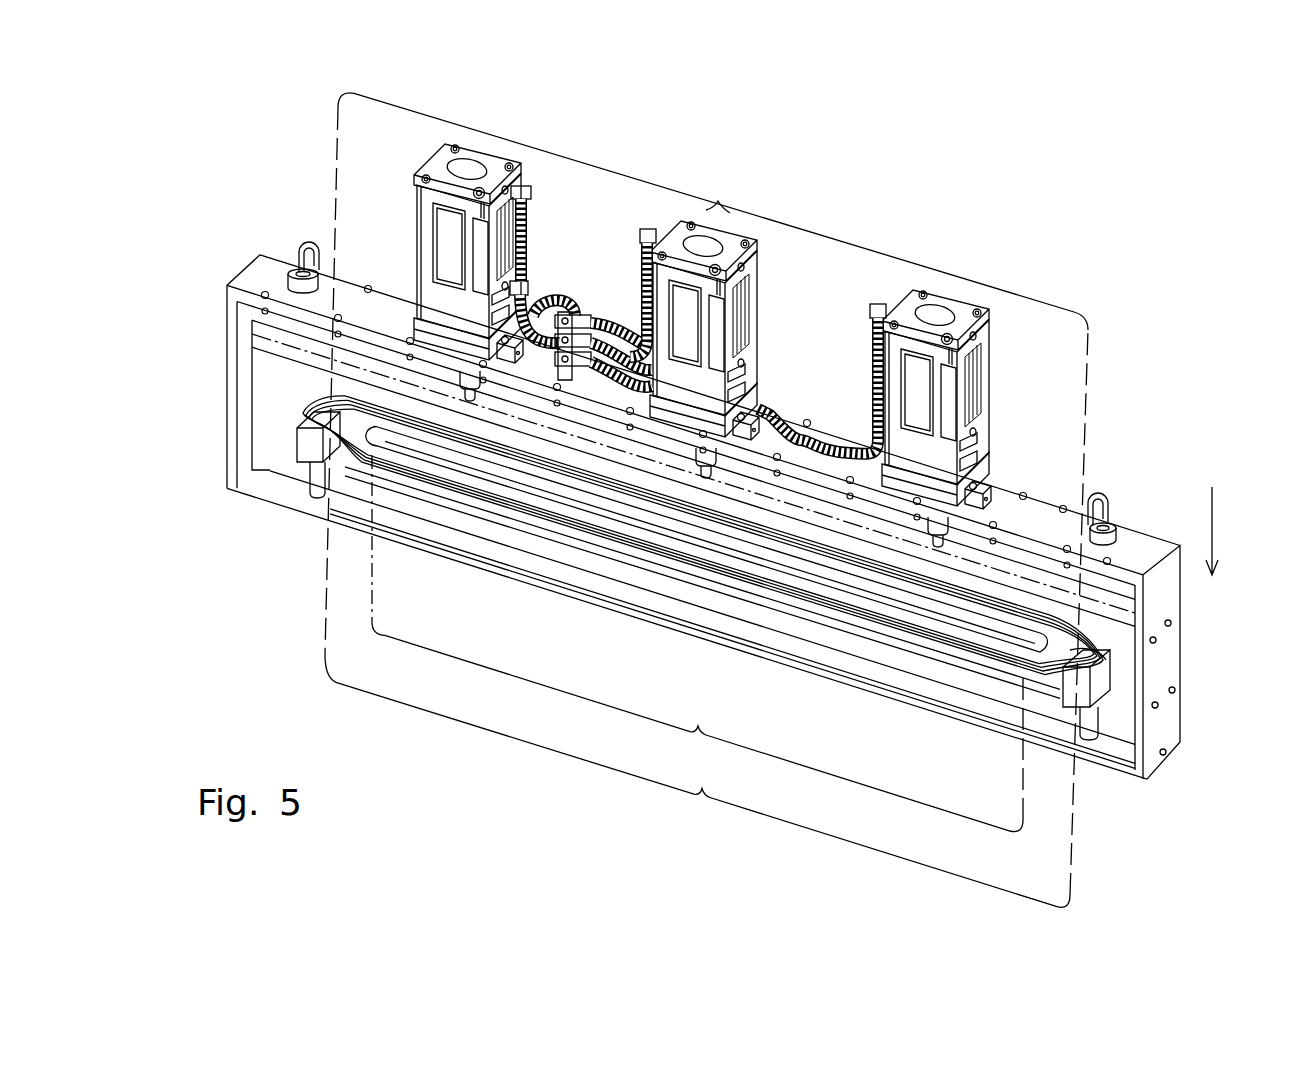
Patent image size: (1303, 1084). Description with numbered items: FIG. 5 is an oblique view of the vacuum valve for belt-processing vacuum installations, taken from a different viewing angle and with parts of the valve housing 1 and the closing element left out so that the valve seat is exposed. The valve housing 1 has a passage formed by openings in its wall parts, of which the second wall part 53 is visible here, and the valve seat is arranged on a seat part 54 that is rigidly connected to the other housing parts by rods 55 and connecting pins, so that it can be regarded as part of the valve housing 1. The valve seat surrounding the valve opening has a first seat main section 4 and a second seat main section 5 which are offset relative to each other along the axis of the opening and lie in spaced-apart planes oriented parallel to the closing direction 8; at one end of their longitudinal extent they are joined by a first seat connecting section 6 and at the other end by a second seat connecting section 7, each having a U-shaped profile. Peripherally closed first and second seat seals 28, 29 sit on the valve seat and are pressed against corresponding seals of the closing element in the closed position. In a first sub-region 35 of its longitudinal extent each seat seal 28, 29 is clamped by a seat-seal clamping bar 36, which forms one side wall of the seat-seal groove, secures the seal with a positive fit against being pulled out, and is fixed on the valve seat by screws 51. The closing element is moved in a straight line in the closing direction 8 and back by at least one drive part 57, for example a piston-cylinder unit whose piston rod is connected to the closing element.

The valve housing 1 is at (1174, 774).
The first seat main section 4 is at (706, 500).
The second seat main section 5 is at (586, 311).
The first seat connecting section 6 is at (1108, 658).
The second seat connecting section 7 is at (318, 410).
The closing direction 8 is at (1216, 525).
The first seat seal 28 is at (308, 417).
The second seat seal 29 is at (315, 423).
The first sub-region 35 is at (697, 643).
The seat-seal clamping bar 36 is at (798, 597).
The screws 51 is at (940, 645).
The second wall part 53 is at (1120, 727).
The seat part 54 is at (1118, 668).
The rods 55 is at (318, 486).
The drive part 57 is at (859, 331).